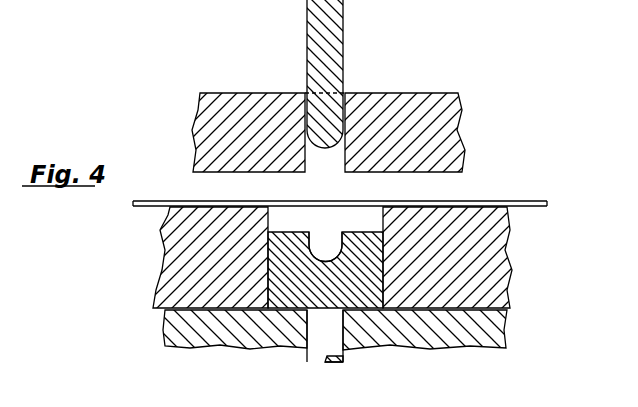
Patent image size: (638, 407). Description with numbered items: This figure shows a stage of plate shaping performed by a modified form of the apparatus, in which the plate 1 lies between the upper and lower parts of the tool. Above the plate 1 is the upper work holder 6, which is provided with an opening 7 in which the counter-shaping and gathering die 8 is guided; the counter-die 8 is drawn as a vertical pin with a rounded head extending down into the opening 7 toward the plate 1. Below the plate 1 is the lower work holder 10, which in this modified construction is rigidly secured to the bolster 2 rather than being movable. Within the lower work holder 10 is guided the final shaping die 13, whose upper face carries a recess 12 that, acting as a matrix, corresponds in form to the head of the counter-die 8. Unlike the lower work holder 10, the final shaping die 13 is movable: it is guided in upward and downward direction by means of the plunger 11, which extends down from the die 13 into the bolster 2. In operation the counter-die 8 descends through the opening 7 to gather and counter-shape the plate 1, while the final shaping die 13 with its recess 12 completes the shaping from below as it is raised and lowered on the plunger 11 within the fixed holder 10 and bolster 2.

The sheet / plate 1 is at (522, 200).
The bolster 2 is at (460, 328).
The upper work holder 6 is at (425, 135).
The opening 7 is at (326, 162).
The counter-shaping and gathering die 8 is at (322, 58).
The lower work holder 10 is at (193, 248).
The plunger 11 is at (325, 350).
The recess 12 is at (314, 244).
The final shaping die 13 is at (302, 298).